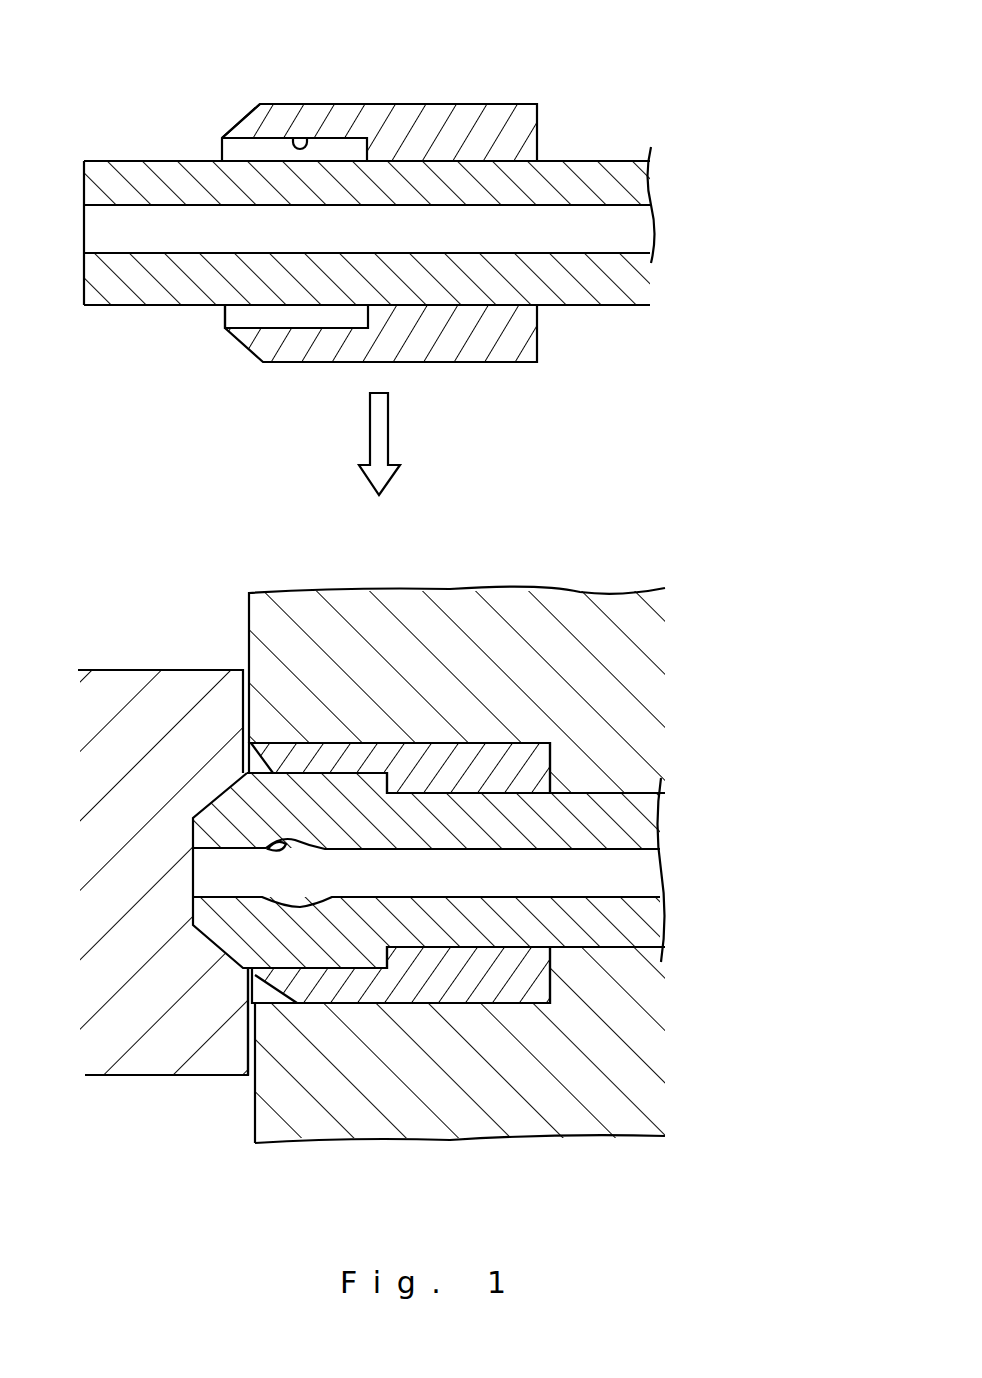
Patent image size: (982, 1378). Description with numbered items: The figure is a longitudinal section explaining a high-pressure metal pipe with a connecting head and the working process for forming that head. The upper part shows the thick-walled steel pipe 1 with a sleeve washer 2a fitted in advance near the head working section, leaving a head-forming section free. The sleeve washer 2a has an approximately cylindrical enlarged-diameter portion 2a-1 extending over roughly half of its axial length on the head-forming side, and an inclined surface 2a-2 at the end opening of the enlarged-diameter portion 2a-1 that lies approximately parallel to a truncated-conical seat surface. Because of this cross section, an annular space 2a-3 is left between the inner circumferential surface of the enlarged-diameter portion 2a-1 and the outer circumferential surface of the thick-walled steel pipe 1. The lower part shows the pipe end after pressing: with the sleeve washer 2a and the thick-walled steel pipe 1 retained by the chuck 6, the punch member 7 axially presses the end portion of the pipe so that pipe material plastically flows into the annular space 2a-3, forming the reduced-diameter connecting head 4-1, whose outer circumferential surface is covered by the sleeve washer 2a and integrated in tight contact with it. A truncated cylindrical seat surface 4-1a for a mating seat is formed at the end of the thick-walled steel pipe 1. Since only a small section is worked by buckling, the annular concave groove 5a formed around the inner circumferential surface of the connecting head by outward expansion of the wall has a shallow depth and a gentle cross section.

The thick-walled steel pipe 1 is at (592, 161).
The sleeve washer 2a is at (425, 118).
The enlarged-diameter portion 2a-1 is at (299, 141).
The inclined surface 2a-2 is at (247, 128).
The annular space 2a-3 is at (236, 315).
The reduced-diameter connecting head 4-1 is at (333, 800).
The truncated cylindrical seat surface 4-1a is at (238, 966).
The annular concave groove 5a is at (227, 793).
The chuck 6 is at (355, 1112).
The punch member 7 is at (177, 693).